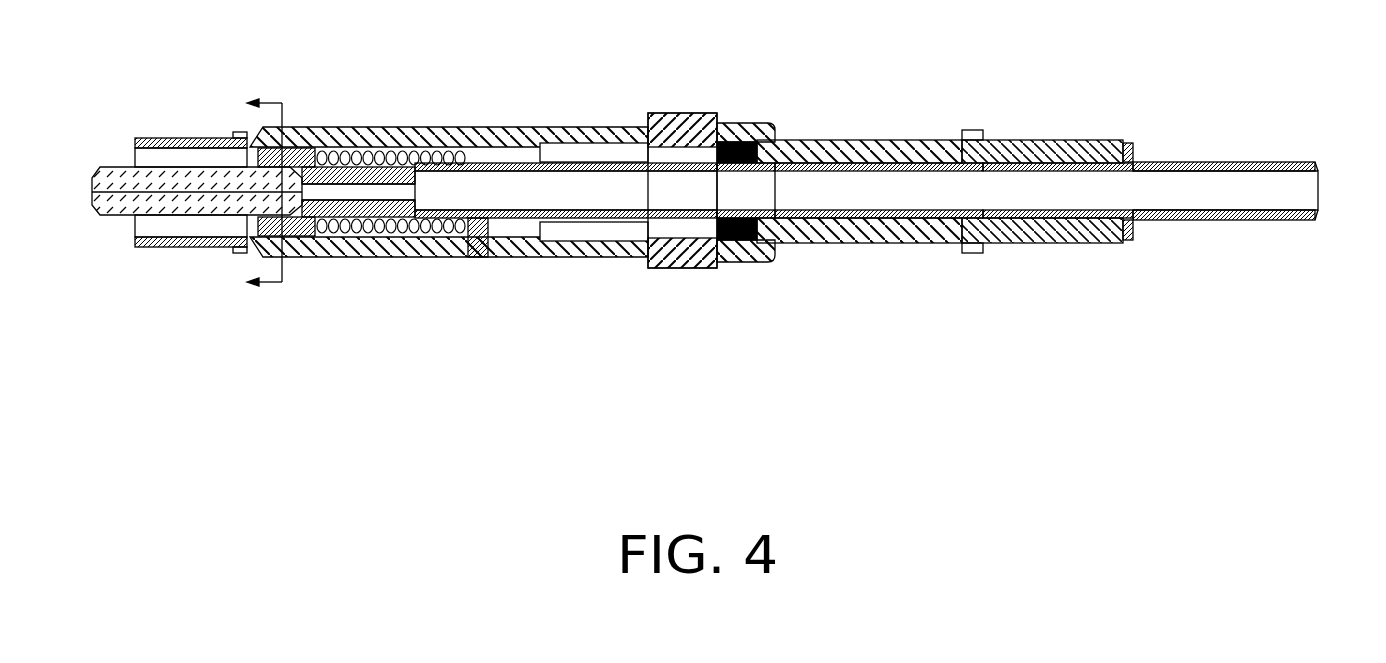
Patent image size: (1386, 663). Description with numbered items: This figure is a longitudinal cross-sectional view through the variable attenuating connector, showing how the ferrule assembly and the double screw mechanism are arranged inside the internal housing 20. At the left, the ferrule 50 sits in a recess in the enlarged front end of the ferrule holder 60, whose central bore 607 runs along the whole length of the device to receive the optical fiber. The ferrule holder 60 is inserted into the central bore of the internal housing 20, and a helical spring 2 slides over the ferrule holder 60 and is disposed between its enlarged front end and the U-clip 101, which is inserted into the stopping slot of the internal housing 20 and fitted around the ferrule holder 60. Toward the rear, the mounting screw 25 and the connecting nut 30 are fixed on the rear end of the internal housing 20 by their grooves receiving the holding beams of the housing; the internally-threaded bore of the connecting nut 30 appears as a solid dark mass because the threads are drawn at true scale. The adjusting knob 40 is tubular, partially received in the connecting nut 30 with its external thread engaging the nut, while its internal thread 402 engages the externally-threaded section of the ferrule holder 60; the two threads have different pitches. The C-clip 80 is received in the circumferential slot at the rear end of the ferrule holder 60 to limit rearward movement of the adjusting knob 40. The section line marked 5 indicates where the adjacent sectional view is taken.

The helical spring 2 is at (437, 247).
The section line 5- 5 is at (264, 195).
The internal housing 20 is at (512, 130).
The mounting screw 25 is at (687, 268).
The connecting nut 30 is at (751, 125).
The adjusting knob 40 is at (1013, 152).
The ferrule 50 is at (142, 200).
The ferrule holder 60 is at (1188, 222).
The C-clip 80 is at (1133, 145).
The U-clip 101 is at (480, 242).
The internal thread 402 is at (838, 158).
The central bore 607 is at (1203, 182).